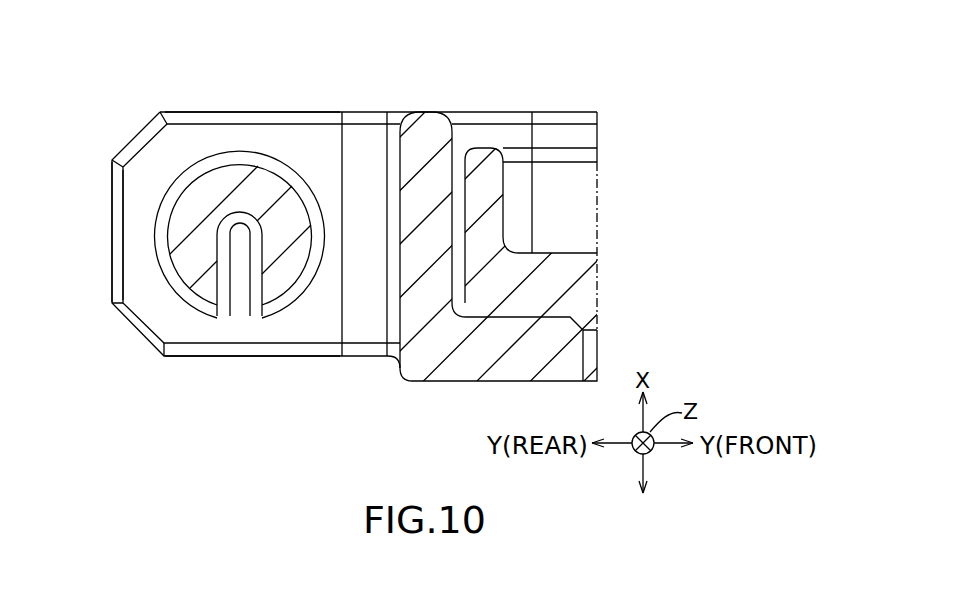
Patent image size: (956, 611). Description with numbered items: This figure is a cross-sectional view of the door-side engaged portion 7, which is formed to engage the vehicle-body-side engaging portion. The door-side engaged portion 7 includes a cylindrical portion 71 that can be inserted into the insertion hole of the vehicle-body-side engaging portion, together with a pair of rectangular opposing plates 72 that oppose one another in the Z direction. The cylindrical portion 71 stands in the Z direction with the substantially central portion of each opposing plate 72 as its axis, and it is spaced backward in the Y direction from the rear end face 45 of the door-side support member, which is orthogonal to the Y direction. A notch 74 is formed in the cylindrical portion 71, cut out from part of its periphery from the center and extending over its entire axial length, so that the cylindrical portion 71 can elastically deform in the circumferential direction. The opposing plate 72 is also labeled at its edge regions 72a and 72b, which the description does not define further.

The door-side engaged portion 7 is at (136, 331).
The cylindrical portion 71 is at (198, 198).
The opposing plate 72 is at (138, 288).
The end edge of plate portion 72a is at (112, 232).
The side edge of plate portion 72b is at (200, 112).
The notch 74 is at (235, 314).
The rear end face 45 is at (400, 313).